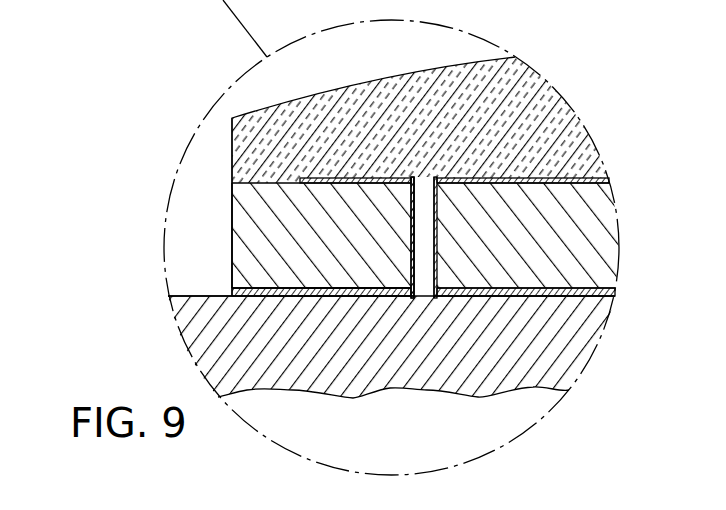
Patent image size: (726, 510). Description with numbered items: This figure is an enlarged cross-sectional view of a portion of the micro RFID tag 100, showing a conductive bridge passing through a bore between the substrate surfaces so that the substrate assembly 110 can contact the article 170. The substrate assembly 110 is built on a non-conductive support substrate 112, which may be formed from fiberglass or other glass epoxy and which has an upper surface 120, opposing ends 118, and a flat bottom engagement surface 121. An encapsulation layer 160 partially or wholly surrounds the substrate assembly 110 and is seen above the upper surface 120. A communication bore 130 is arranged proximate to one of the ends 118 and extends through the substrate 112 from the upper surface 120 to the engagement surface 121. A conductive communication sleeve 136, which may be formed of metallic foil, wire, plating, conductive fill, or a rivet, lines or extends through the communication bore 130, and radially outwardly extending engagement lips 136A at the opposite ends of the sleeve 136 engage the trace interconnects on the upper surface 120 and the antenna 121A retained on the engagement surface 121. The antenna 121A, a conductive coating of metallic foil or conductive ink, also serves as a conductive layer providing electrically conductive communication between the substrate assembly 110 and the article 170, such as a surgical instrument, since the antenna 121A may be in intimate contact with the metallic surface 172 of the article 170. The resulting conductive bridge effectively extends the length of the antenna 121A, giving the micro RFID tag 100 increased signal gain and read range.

The micro RFID tag 100 is at (229, 135).
The encapsulation layer 160 is at (297, 95).
The upper surface 120 is at (261, 181).
The substrate assembly 110 is at (556, 176).
The support substrate 112 is at (230, 198).
The opposing ends 118 is at (232, 247).
The engagement surface 121 is at (229, 300).
The metallic surface 172 is at (601, 292).
The antenna 121A is at (368, 294).
The communication bore 130 is at (428, 178).
The conductive communication sleeve 136 is at (417, 232).
The engagement lip 136A is at (412, 177).
The article 170 is at (604, 342).